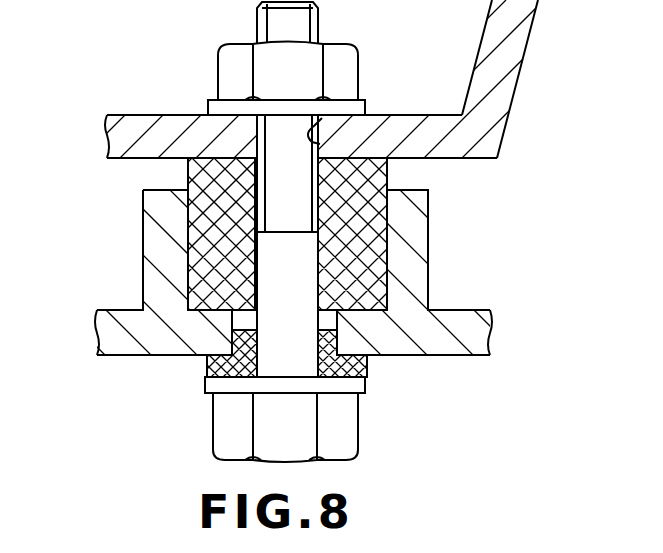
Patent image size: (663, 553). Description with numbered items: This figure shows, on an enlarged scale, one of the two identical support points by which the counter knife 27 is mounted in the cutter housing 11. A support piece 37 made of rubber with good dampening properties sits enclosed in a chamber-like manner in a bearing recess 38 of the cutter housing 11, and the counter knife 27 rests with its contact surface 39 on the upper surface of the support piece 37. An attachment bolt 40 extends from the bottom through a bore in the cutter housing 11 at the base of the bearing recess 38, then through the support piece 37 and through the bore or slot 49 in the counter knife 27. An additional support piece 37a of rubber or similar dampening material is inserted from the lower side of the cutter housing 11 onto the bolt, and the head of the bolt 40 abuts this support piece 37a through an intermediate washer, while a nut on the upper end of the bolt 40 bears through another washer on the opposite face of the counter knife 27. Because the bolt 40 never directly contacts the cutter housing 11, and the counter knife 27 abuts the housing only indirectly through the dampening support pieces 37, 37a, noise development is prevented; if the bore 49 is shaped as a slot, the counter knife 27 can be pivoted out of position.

The cutter housing 11 is at (108, 330).
The counter knife 27 is at (498, 106).
The support piece 37 is at (387, 242).
The additional support piece 37a is at (363, 367).
The bearing recess 38 is at (188, 240).
The contact surface 39 is at (148, 158).
The attachment bolt 40 is at (265, 420).
The bore or slot 49 is at (322, 118).